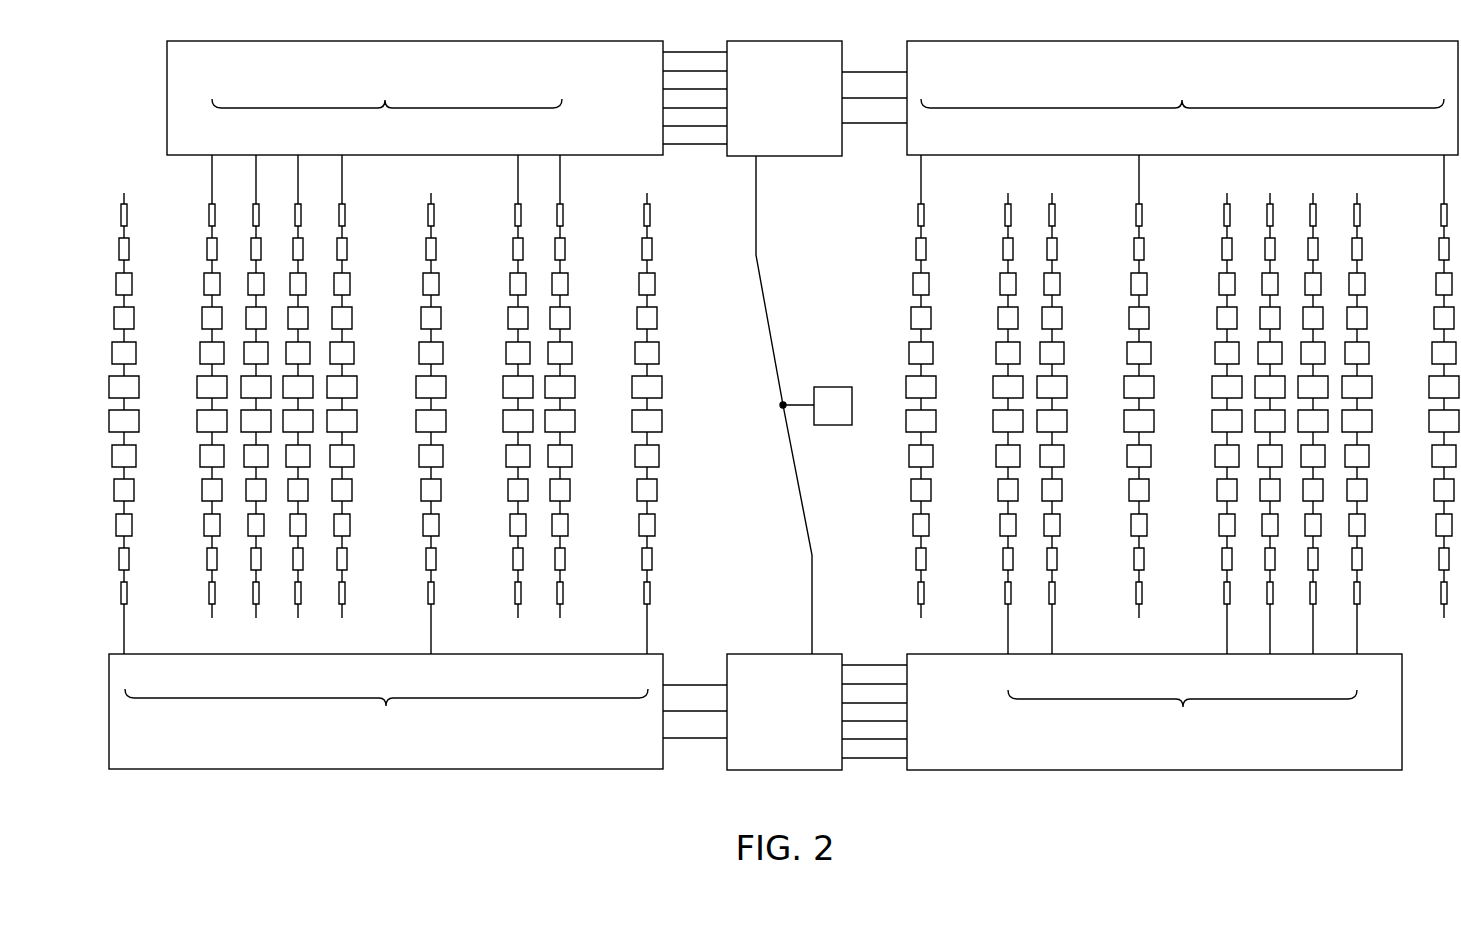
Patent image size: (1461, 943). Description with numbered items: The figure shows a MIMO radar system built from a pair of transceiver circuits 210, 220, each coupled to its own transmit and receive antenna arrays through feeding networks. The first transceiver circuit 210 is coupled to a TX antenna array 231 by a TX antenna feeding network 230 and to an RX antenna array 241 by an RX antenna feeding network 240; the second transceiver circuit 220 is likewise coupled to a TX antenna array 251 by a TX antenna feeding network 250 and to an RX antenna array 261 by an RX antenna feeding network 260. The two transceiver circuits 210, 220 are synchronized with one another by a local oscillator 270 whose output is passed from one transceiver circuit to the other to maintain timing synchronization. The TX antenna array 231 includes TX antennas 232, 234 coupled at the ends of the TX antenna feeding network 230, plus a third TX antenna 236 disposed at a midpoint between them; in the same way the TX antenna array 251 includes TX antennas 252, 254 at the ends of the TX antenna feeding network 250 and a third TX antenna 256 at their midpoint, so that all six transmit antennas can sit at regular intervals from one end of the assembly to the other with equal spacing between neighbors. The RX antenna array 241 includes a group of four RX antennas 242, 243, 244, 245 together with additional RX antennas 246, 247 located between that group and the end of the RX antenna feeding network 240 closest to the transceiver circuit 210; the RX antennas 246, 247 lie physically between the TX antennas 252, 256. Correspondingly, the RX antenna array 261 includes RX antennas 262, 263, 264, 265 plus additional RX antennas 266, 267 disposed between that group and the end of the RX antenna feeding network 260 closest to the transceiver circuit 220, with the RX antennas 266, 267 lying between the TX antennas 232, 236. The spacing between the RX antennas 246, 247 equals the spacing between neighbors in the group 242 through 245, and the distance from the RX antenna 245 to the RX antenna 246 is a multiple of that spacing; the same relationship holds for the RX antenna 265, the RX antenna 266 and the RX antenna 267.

The transceiver circuit 210 is at (785, 41).
The transceiver circuit 220 is at (783, 770).
The TX antenna feeding network 230 is at (1182, 41).
The TX antenna array 231 is at (1182, 91).
The TX antenna 232 is at (923, 171).
The TX antenna 234 is at (1442, 171).
The third TX antenna 236 is at (1137, 171).
The RX antenna feeding network 240 is at (416, 41).
The RX antenna array 241 is at (387, 91).
The RX antenna 242 is at (210, 171).
The RX antenna 243 is at (254, 171).
The RX antenna 244 is at (296, 171).
The RX antenna 245 is at (340, 171).
The RX antenna 246 is at (516, 171).
The RX antenna 247 is at (558, 171).
The TX antenna feeding network 250 is at (385, 769).
The TX antenna array 251 is at (386, 714).
The TX antenna 252 is at (646, 640).
The TX antenna 254 is at (125, 640).
The third TX antenna 256 is at (432, 640).
The RX antenna feeding network 260 is at (1153, 770).
The RX antenna array 261 is at (1182, 715).
The RX antenna 262 is at (1358, 640).
The RX antenna 263 is at (1314, 640).
The RX antenna 264 is at (1271, 640).
The RX antenna 265 is at (1228, 640).
The RX antenna 266 is at (1053, 640).
The RX antenna 267 is at (1009, 640).
The local oscillator 270 is at (832, 387).